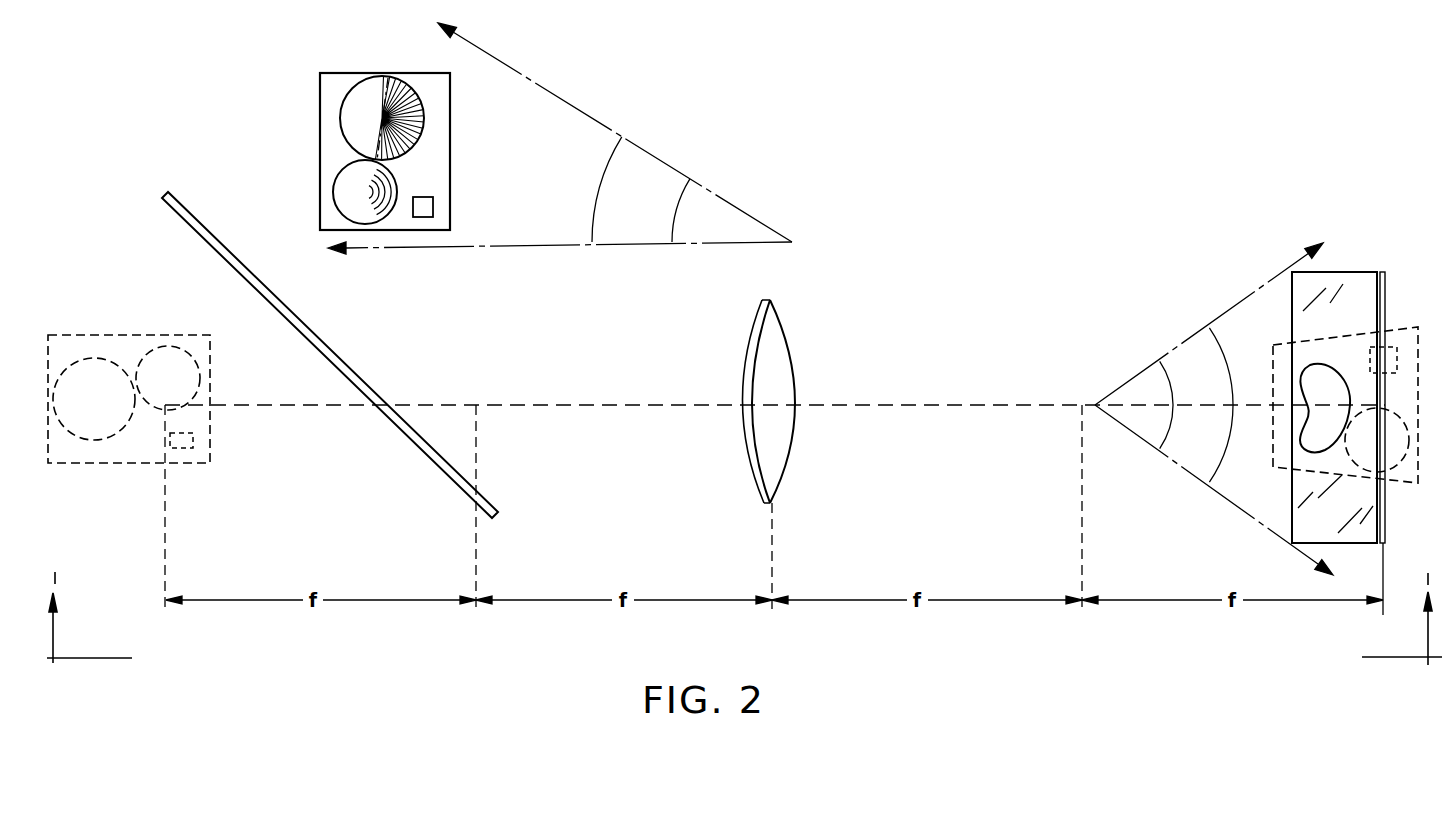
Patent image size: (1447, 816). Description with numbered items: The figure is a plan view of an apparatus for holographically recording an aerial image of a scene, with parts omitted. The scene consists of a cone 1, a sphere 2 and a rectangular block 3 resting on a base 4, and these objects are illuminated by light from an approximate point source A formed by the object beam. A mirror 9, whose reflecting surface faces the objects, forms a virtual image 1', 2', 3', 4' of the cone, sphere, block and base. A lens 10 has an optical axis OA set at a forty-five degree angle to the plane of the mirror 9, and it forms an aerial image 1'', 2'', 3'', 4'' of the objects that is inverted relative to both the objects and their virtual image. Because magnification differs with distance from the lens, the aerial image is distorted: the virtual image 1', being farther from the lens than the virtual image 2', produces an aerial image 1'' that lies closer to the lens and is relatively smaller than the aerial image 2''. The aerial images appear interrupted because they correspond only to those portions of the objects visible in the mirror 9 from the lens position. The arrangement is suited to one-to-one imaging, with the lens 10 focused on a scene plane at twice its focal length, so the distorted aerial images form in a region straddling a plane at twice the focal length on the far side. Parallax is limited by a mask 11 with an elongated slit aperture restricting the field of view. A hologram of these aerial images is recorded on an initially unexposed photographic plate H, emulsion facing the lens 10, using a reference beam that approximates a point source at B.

The cone 1 is at (382, 103).
The sphere 2 is at (346, 192).
The rectangular block 3 is at (423, 187).
The base 4 is at (368, 139).
The mirror 9 is at (341, 358).
The lens 10 is at (792, 363).
The mask 11 is at (745, 372).
The virtual image of the cone 1' is at (94, 373).
The virtual image of the sphere 2' is at (188, 378).
The virtual image of the rectangular block 3' is at (206, 446).
The virtual image of the base 4' is at (129, 414).
The aerial image of the cone 1'' is at (1329, 396).
The aerial image of the sphere 2'' is at (1396, 440).
The aerial image of the rectangular block 3'' is at (1394, 335).
The aerial image of the base 4'' is at (1360, 405).
The point source of the object beam A is at (792, 242).
The point source of the reference beam B is at (1095, 405).
The photographic plate H is at (1355, 277).
The optical axis OA is at (945, 404).